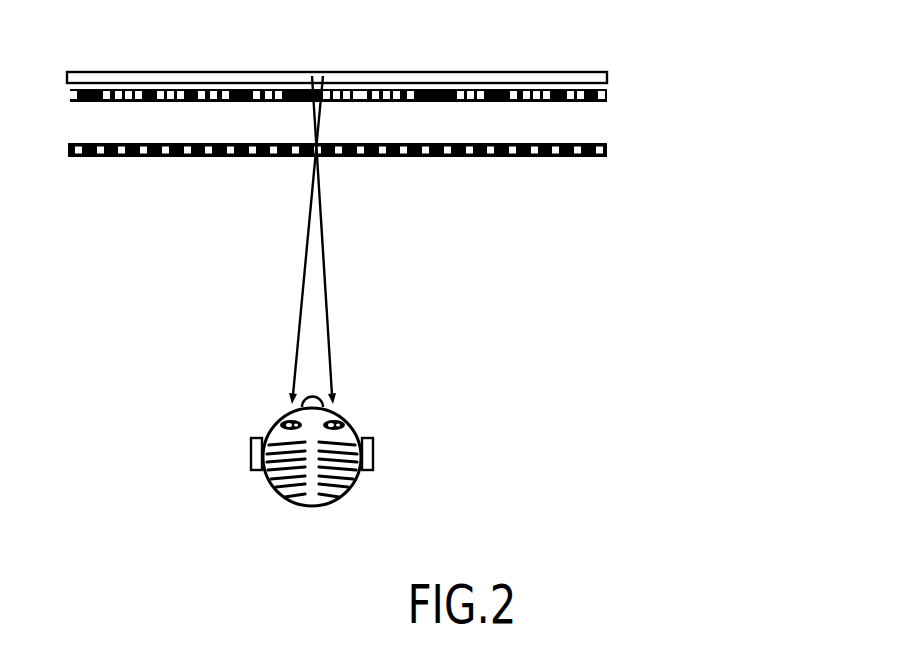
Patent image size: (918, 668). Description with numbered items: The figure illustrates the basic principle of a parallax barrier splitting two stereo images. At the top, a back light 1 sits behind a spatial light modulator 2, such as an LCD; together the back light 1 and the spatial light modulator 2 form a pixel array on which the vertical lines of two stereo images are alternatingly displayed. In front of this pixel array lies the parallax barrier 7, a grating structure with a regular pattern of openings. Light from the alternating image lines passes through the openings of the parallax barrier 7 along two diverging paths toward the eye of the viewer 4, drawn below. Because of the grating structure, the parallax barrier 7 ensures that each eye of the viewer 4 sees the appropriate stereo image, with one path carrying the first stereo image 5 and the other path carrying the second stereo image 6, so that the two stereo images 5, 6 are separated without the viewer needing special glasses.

The backlight 1 is at (603, 73).
The spatial light modulator 2 is at (607, 93).
The parallax barrier 7 is at (609, 153).
The viewer 4 is at (328, 452).
The first stereo image 5 is at (296, 240).
The second stereo image 6 is at (336, 240).